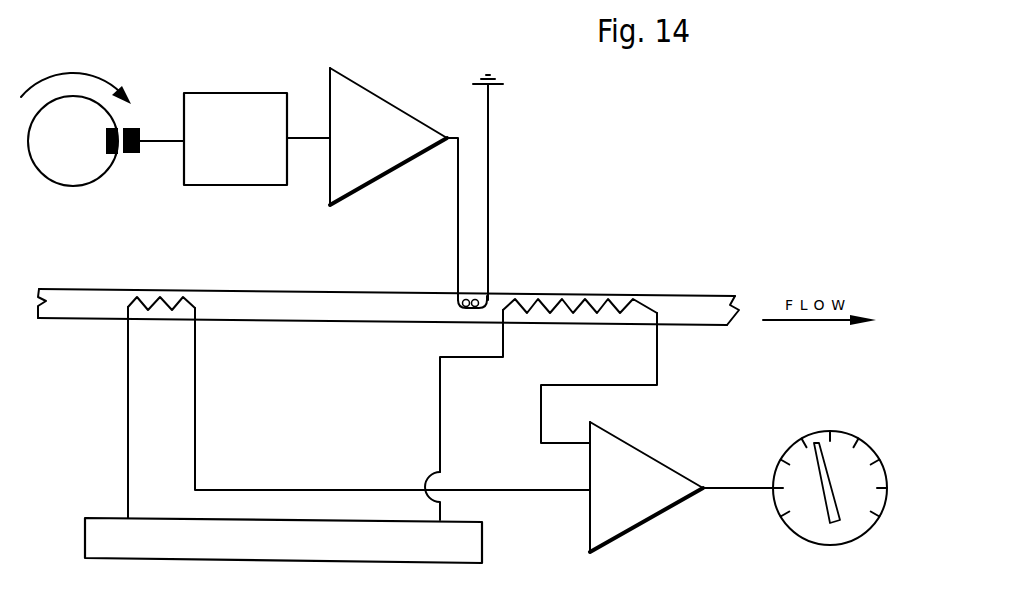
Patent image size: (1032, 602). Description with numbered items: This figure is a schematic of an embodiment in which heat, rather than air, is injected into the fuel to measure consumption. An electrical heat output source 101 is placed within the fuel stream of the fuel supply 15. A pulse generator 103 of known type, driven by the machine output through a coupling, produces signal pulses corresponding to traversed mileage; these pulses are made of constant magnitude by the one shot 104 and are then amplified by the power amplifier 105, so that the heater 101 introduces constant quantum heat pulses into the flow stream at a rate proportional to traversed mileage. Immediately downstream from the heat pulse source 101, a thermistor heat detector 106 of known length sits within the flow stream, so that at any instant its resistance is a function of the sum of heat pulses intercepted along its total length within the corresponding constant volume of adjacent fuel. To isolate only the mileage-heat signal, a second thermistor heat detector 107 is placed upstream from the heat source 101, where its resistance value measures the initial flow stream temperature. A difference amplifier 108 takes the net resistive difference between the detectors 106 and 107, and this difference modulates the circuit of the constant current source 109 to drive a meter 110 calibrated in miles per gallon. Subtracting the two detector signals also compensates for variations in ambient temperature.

The fuel supply 15 is at (97, 320).
The electrical heat output source 101 is at (468, 309).
The pulse generator 103 is at (62, 186).
The one shot 104 is at (217, 188).
The power amplifier 105 is at (362, 84).
The thermistor heat detector 106 is at (567, 308).
The thermistor heat detector 107 is at (148, 298).
The difference amplifier 108 is at (620, 540).
The constant current source 109 is at (225, 562).
The meter 110 is at (808, 545).